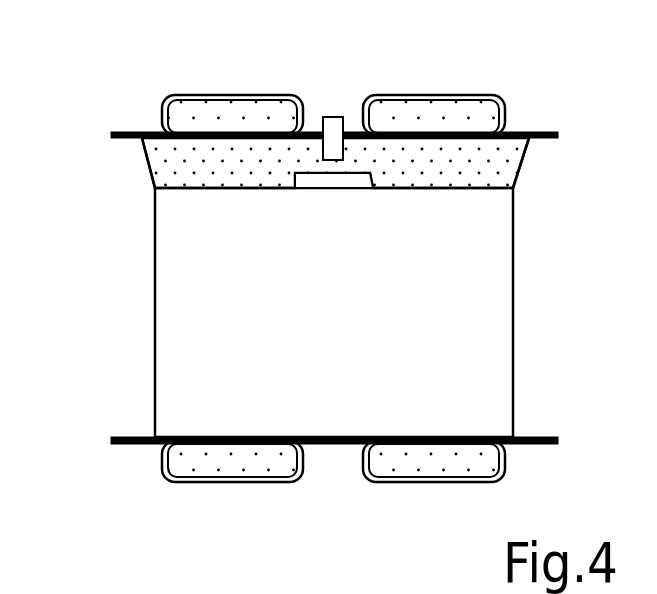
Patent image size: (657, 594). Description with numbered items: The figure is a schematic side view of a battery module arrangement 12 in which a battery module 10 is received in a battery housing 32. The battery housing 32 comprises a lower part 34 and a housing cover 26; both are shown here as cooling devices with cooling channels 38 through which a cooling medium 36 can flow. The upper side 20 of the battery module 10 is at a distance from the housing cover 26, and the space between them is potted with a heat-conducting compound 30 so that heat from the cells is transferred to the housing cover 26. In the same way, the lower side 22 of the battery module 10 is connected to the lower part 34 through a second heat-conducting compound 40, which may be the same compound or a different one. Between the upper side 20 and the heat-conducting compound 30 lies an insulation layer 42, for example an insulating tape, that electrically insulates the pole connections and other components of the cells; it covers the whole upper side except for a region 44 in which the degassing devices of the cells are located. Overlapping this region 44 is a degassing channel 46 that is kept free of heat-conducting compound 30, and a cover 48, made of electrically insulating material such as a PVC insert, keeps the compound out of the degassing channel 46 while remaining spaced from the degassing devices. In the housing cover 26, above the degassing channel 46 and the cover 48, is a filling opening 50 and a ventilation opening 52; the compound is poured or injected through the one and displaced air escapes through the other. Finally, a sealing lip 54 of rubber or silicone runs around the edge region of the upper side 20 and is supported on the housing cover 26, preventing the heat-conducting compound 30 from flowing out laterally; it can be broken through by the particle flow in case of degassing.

The battery module 10 is at (562, 276).
The battery module arrangement 12 is at (140, 92).
The upper side 20 is at (424, 172).
The lower side 22 is at (237, 465).
The housing cover 26 is at (116, 130).
The heat-conducting compound 30 is at (216, 152).
The battery housing 32 is at (73, 90).
The lower part 34 is at (136, 432).
The cooling medium 36 is at (193, 115).
The cooling channels 38 is at (265, 94).
The second heat-conducting compound 40 is at (174, 437).
The insulation layer 42 is at (422, 190).
The region 44 is at (354, 190).
The degassing channel 46 is at (312, 178).
The cover 48 is at (378, 125).
The filling opening 50 is at (331, 117).
The ventilation opening 52 is at (333, 138).
The sealing lip 54 is at (520, 167).